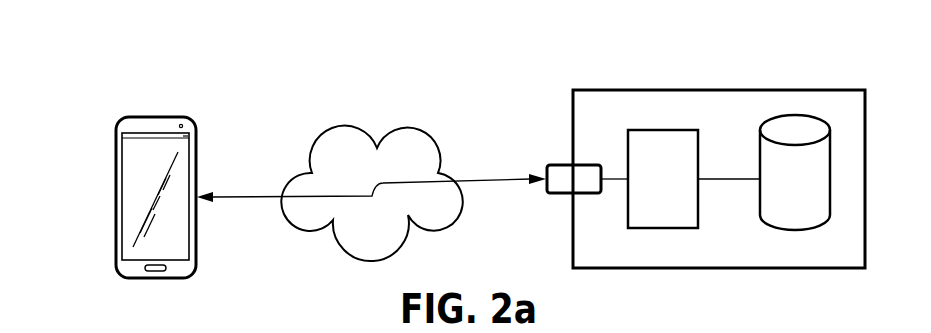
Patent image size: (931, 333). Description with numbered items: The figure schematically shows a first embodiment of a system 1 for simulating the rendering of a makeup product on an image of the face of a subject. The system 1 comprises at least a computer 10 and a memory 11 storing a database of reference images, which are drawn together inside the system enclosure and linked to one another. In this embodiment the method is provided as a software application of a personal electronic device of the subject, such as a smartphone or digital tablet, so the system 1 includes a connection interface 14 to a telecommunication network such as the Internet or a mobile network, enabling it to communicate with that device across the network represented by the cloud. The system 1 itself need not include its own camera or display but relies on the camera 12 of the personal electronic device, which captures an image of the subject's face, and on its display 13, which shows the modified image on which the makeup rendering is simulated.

The system 1 is at (776, 82).
The computer 10 is at (677, 192).
The memory 11 is at (809, 192).
The camera 12 is at (136, 125).
The display 13 is at (140, 207).
The connection interface 14 is at (562, 163).